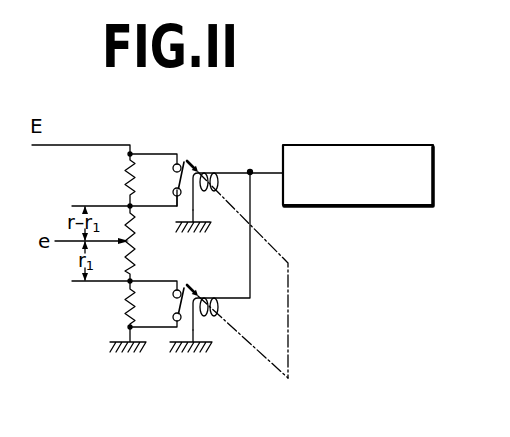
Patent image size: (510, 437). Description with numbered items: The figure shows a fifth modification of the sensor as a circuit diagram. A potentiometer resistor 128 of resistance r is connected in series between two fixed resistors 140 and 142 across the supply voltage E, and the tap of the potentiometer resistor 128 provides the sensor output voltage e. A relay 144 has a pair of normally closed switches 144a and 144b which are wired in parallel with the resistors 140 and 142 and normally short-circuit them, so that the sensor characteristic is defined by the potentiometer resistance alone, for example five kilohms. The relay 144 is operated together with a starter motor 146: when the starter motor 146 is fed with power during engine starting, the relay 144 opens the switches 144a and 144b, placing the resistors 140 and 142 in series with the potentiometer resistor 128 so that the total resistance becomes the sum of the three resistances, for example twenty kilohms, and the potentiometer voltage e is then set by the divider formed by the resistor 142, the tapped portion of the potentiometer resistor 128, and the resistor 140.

The potentiometer resistor 128 is at (136, 251).
The resistor 140 is at (128, 176).
The resistor 142 is at (125, 297).
The relay 144 is at (288, 356).
The normally closed switch 144a is at (176, 178).
The normally closed switch 144b is at (183, 304).
The starter motor 146 is at (326, 145).